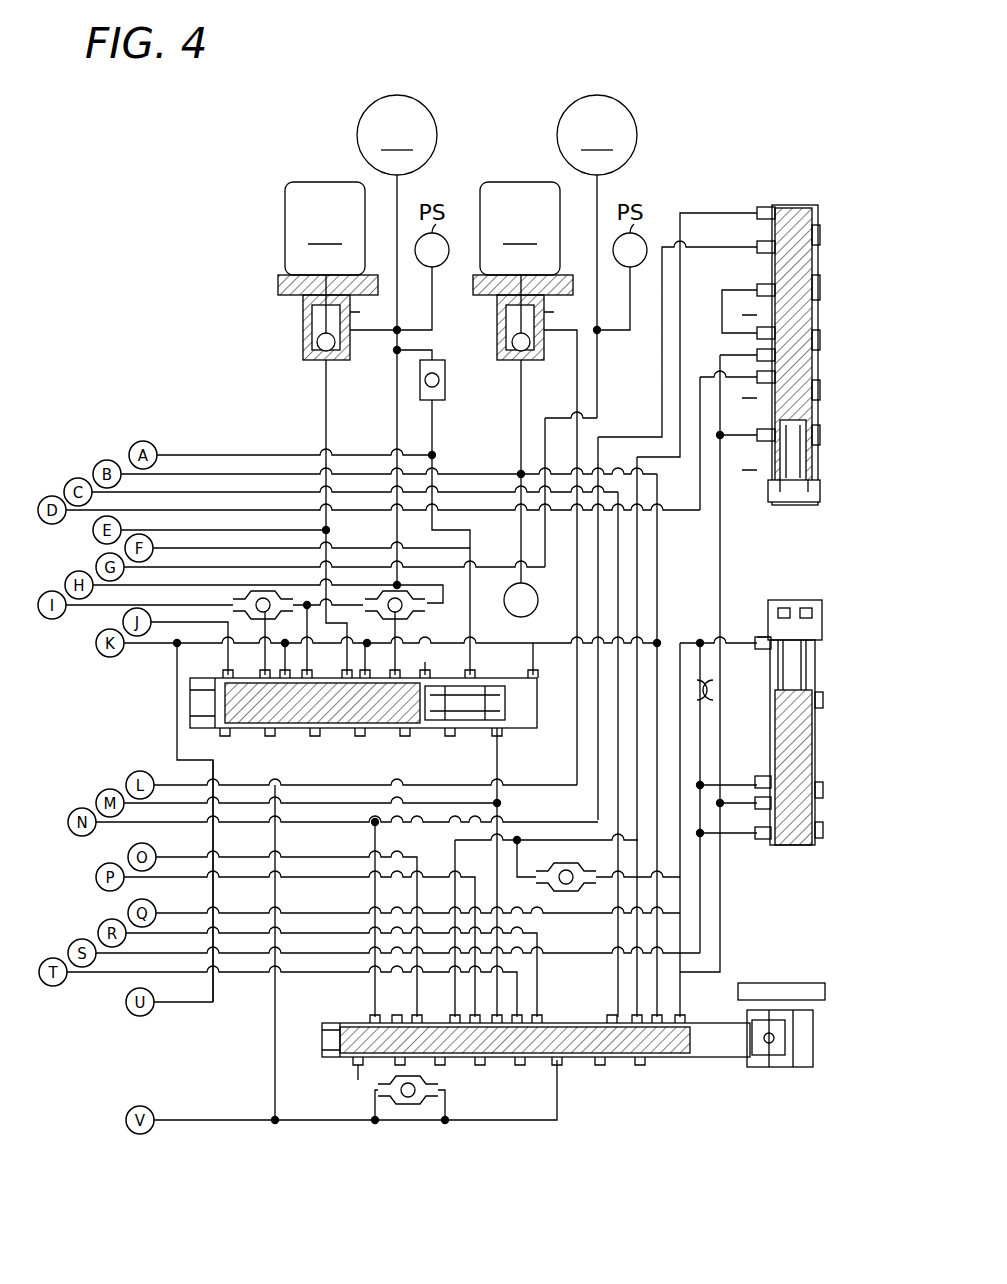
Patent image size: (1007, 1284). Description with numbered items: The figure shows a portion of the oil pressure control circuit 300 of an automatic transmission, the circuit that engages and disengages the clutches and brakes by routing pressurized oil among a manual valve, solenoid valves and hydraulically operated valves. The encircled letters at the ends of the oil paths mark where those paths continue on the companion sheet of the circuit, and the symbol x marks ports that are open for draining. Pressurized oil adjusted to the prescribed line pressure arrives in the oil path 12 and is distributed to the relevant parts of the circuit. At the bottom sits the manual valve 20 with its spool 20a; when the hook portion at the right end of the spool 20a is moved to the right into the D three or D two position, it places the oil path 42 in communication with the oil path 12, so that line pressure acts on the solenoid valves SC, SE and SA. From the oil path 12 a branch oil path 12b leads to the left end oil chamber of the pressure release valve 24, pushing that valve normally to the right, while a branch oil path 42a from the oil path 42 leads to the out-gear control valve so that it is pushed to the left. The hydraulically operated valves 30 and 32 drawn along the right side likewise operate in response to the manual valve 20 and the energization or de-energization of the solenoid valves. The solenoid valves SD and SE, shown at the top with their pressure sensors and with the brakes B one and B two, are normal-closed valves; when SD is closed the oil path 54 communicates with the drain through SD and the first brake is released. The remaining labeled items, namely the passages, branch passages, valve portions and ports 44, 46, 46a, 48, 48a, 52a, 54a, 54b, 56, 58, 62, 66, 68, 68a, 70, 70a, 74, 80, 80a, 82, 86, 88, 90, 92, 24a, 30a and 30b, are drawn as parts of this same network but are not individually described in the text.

The oil pressure control circuit 300 is at (266, 340).
The oil path 54 is at (393, 188).
The second solenoid valve line 58 is at (600, 188).
The line pressure passage 48 is at (327, 390).
The branch passage 54a is at (392, 438).
The oil path 42 is at (488, 472).
The oil path 12 is at (76, 478).
The oil path 12b is at (97, 630).
The branch passage 48a is at (250, 531).
The oil passage 82 is at (686, 505).
The hydraulically operated valve 32 is at (778, 505).
The oil passage 86 is at (730, 630).
The upper portion of valve 30 30b is at (812, 660).
The oil passage 90 is at (712, 668).
The orifice 92 is at (718, 690).
The oil path 42a is at (533, 645).
The orifice 56 is at (404, 616).
The accumulator 52a is at (466, 600).
The valve portion 46a is at (498, 758).
The valve end portion 24a is at (260, 730).
The pressure release valve 24 is at (371, 843).
The oil passage 46 is at (312, 802).
The port 68a is at (738, 786).
The lower portion of valve 30 30a is at (812, 778).
The oil passage 74 is at (290, 858).
The oil passage 44 is at (440, 868).
The orifice 88 is at (548, 888).
The port 80a is at (795, 848).
The hydraulically operated valve 30 is at (803, 761).
The oil passage 70 is at (577, 385).
The branch passage 70a is at (76, 838).
The oil passage 68 is at (76, 940).
The oil passage 66 is at (236, 978).
The spool 20a is at (340, 1032).
The oil passage 62 is at (273, 1072).
The oil passage 80 is at (722, 930).
The manual valve 20 is at (558, 1065).
The branch passage 54b is at (66, 582).